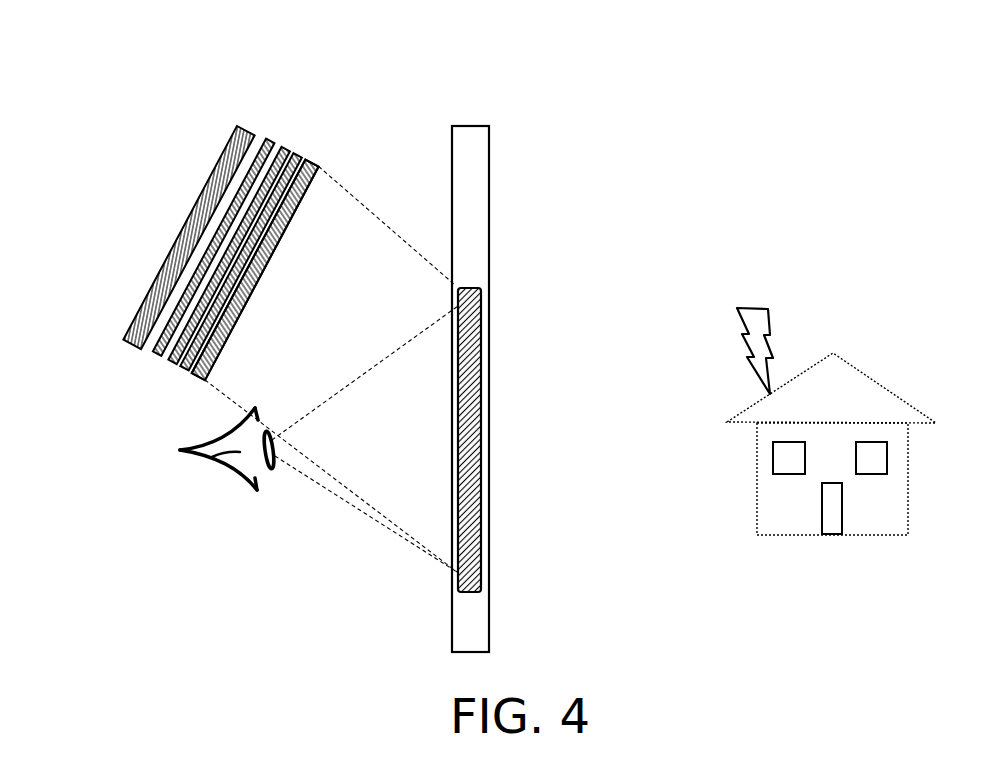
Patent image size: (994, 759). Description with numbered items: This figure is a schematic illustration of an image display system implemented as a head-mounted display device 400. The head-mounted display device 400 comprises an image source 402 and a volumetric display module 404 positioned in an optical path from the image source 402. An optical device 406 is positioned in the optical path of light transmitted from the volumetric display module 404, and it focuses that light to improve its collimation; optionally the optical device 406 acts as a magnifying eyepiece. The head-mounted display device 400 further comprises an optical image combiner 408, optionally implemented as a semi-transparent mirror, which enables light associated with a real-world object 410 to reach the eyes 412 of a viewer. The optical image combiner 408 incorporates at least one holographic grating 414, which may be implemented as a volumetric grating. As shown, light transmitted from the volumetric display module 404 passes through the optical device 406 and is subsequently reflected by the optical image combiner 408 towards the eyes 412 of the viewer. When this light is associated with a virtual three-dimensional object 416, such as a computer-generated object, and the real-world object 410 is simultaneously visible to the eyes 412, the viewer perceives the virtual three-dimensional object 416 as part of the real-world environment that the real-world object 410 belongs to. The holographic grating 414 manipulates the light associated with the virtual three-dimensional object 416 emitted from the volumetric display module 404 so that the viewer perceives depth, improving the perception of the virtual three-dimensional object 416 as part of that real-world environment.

The head-mounted display device 400 is at (553, 138).
The image source 402 is at (163, 270).
The volumetric display module 404 is at (310, 152).
The optical device 406 is at (195, 372).
The optical image combiner 408 is at (470, 140).
The real-world object 410 is at (800, 522).
The eyes of a viewer 412 is at (218, 458).
The holographic grating 414 is at (472, 477).
The virtual 3D object 416 is at (733, 301).